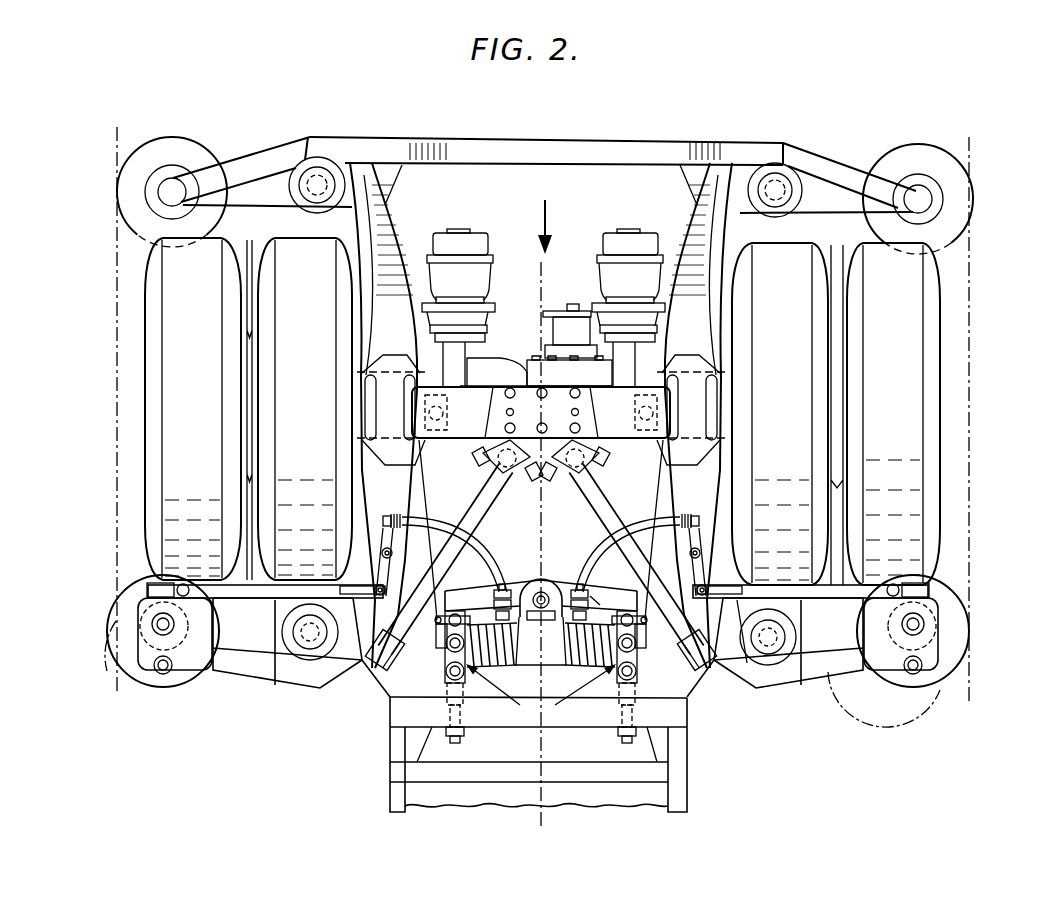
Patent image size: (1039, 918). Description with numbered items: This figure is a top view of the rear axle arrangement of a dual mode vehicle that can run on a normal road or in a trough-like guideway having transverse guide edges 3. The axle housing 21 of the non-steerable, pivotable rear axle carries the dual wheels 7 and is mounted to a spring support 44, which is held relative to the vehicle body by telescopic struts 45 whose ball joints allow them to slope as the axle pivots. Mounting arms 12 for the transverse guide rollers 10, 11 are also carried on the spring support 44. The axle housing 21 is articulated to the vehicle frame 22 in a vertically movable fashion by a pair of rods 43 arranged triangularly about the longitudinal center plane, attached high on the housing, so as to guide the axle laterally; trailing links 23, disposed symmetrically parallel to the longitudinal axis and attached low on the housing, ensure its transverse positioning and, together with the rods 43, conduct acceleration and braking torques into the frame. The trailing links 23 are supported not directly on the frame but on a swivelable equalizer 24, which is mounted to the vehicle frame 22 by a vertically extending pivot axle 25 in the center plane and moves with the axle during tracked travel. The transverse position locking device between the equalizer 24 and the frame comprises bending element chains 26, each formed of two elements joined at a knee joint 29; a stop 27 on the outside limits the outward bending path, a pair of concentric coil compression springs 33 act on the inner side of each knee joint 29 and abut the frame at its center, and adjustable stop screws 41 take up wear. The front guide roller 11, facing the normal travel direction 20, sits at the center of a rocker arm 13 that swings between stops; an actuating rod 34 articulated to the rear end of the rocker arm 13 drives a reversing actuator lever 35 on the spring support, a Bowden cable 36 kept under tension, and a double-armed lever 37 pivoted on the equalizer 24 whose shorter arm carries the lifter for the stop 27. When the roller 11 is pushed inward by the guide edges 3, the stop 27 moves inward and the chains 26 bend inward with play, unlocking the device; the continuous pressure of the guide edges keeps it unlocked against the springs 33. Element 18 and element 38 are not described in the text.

The transverse guide edges 3 is at (115, 323).
The dual wheels 7 is at (867, 267).
The transverse guide roller 10 is at (183, 155).
The transverse guide roller 11 is at (125, 652).
The mounting arms 12 is at (288, 145).
The rocker arm 13 is at (163, 588).
The vehicle body / load carrying member 18 is at (545, 826).
The normal travel direction 20 is at (548, 216).
The axle housing 21 is at (493, 386).
The vehicle frame 22 is at (518, 724).
The trailing links 23 is at (432, 488).
The equalizer 24 is at (561, 598).
The pivot axle 25 is at (532, 592).
The bending element chain 26 is at (541, 649).
The stop 27 is at (434, 645).
The knee joint 29 is at (636, 670).
The coil compression springs 33 is at (592, 652).
The actuating rod 34 is at (268, 600).
The reversing actuator lever 35 is at (382, 542).
The Bowden cable 36 is at (597, 535).
The double-armed lever 37 is at (594, 604).
The upper pivot pin 38 is at (633, 644).
The adjustable stop screw 41 is at (466, 712).
The rods 43 is at (489, 468).
The spring support 44 is at (394, 213).
The telescopic strut 45 is at (305, 660).